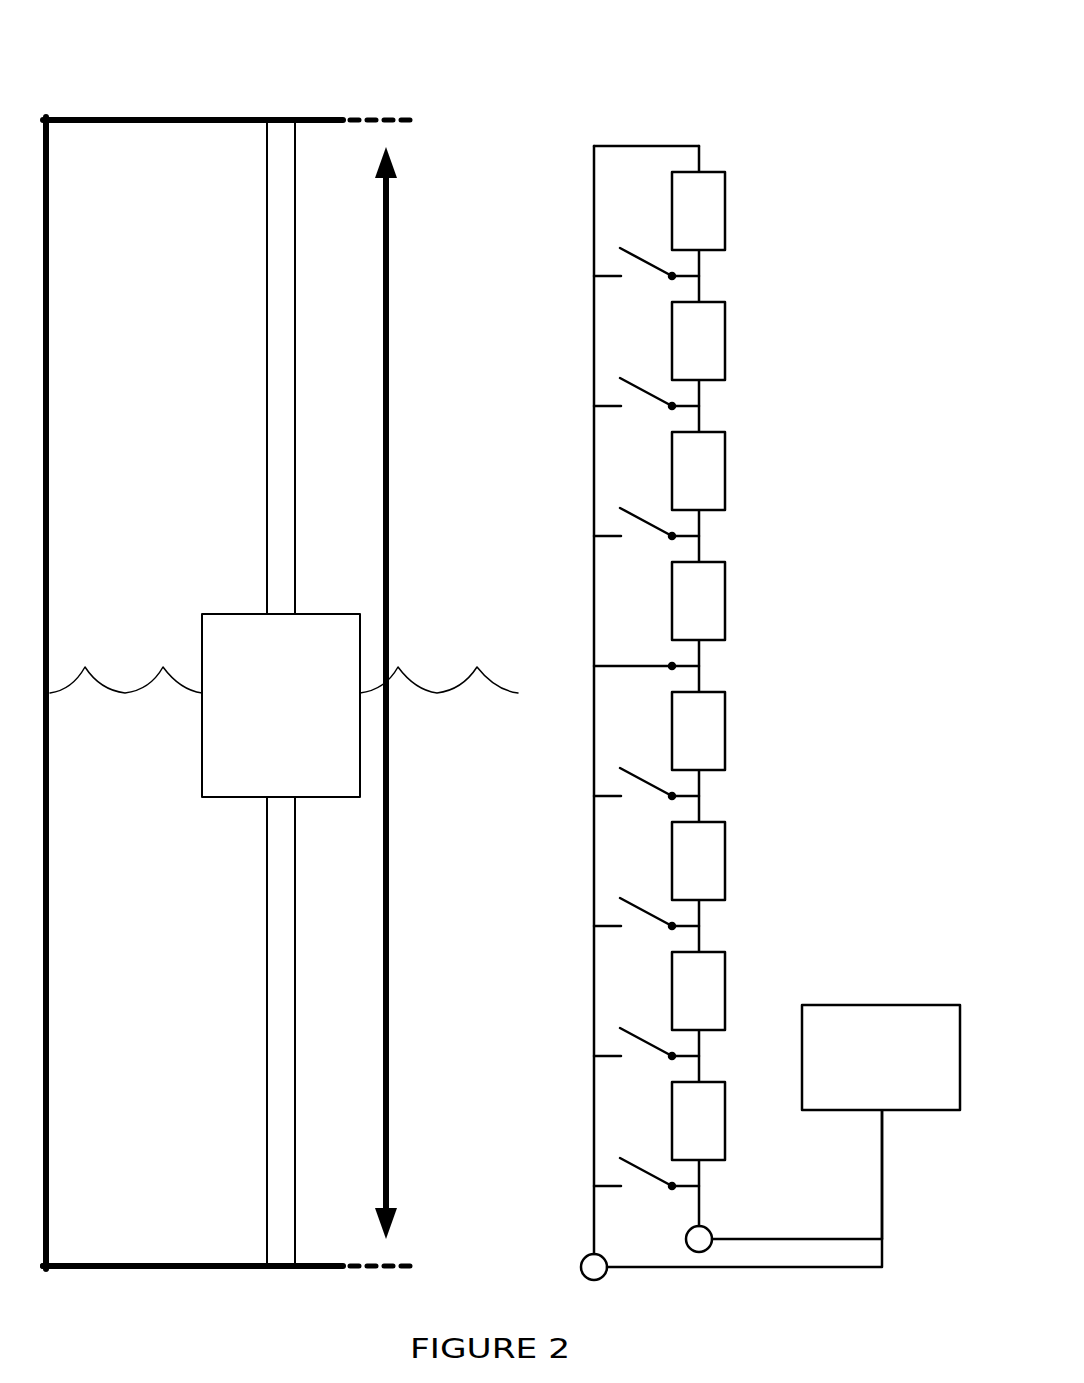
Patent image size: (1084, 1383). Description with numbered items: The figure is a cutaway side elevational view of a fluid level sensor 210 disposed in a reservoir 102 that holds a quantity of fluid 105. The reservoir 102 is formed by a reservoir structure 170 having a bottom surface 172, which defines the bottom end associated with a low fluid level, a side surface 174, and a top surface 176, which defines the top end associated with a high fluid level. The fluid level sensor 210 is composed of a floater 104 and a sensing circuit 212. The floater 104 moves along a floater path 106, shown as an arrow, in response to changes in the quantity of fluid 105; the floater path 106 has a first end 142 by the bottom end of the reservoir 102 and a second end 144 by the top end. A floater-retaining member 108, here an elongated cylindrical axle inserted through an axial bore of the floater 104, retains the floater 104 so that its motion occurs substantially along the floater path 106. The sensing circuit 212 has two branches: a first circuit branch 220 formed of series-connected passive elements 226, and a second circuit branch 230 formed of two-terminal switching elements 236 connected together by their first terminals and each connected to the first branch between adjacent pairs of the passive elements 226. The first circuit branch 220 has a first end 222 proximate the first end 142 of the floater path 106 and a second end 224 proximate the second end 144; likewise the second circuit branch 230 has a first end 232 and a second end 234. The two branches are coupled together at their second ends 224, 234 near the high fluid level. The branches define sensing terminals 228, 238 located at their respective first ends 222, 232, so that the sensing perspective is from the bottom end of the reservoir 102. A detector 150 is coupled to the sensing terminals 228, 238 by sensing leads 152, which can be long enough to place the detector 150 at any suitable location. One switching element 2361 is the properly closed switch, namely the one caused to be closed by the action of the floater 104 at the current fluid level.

The reservoir 102 is at (193, 667).
The floater 104 is at (281, 705).
The fluid 105 is at (284, 715).
The floater path 106 is at (389, 640).
The floater-retaining member 108 is at (267, 185).
The first end of floater path 142 is at (345, 1217).
The second end of floater path 144 is at (345, 148).
The detector 150 is at (881, 1057).
The sensing leads 152 is at (897, 1227).
The reservoir structure 170 is at (172, 1299).
The bottom surface 172 is at (200, 1263).
The side surface 174 is at (50, 1005).
The top surface 176 is at (100, 123).
The fluid level sensor 210 is at (128, 427).
The sensing circuit 212 is at (706, 654).
The first circuit branch 220 is at (742, 594).
The first end of first circuit branch 222 is at (727, 1215).
The second end of first circuit branch 224 is at (717, 627).
The passive elements 226 is at (725, 472).
The sensing terminal 228 is at (686, 1233).
The second circuit branch 230 is at (594, 608).
The first end of second circuit branch 232 is at (563, 1214).
The second end of second circuit branch 234 is at (576, 608).
The switching elements 236 is at (634, 495).
The properly closed switching element 2361 is at (640, 634).
The sensing terminal 238 is at (580, 1267).